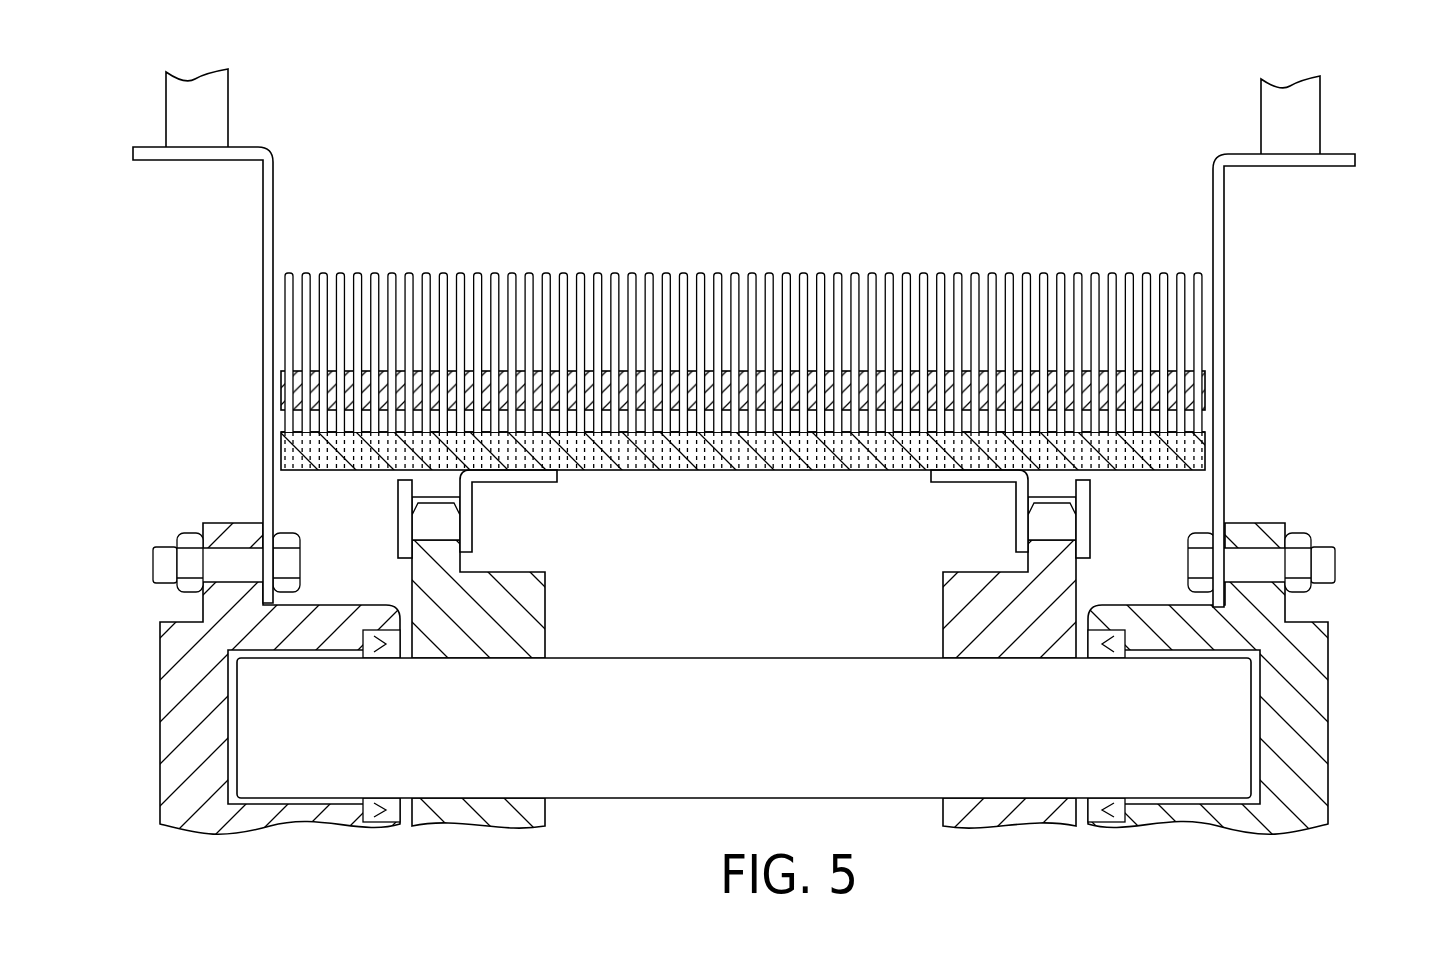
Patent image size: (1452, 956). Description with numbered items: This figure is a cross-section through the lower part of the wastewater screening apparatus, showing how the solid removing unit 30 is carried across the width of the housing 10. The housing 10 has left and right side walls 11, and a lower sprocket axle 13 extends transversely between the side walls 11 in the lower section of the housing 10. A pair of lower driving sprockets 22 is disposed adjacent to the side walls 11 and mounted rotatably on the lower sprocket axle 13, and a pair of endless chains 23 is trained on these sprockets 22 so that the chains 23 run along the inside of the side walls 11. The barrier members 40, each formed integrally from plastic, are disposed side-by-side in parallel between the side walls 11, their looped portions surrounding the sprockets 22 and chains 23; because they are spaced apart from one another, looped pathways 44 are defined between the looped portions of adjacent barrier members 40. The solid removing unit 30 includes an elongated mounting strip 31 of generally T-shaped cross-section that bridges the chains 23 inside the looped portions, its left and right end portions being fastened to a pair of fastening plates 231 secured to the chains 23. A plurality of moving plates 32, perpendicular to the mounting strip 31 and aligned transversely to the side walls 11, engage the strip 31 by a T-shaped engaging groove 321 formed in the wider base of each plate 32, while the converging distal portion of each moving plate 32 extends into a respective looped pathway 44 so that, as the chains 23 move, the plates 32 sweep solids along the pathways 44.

The housing 10 is at (1332, 128).
The side walls 11 is at (263, 272).
The lower sprocket axle 13 is at (718, 778).
The lower driving sprockets 22 is at (1053, 627).
The endless chains 23 is at (1080, 527).
The fastening plates 231 is at (952, 482).
The solid removing unit 30 is at (845, 401).
The mounting strip 31 is at (1185, 455).
The moving plates 32 is at (1198, 343).
The T-shaped engaging groove 321 is at (1198, 437).
The barrier members 40 is at (781, 318).
The looped pathways 44 is at (898, 375).